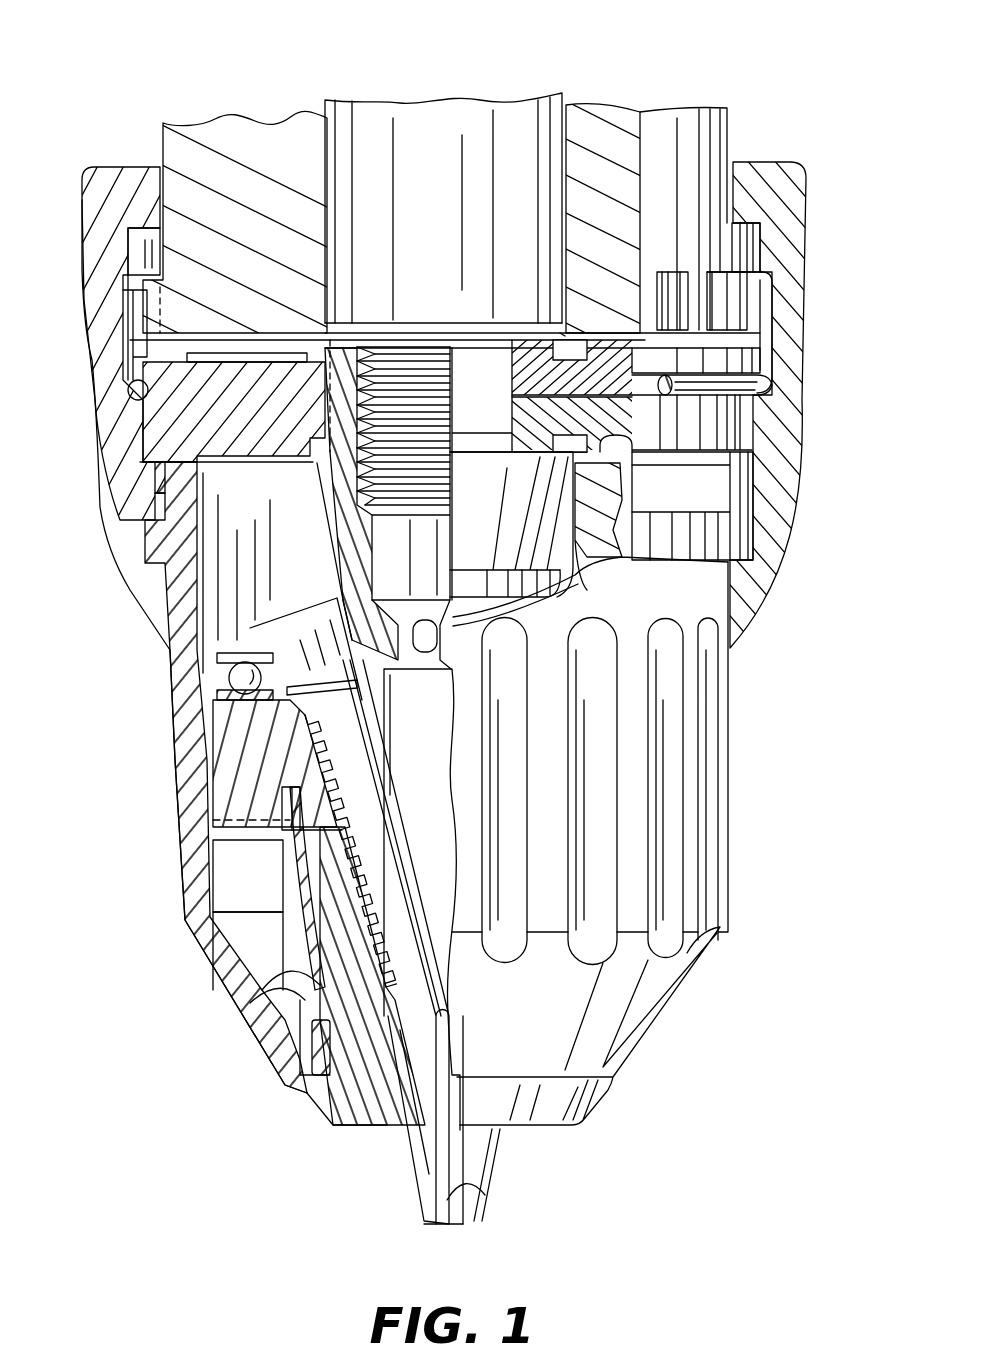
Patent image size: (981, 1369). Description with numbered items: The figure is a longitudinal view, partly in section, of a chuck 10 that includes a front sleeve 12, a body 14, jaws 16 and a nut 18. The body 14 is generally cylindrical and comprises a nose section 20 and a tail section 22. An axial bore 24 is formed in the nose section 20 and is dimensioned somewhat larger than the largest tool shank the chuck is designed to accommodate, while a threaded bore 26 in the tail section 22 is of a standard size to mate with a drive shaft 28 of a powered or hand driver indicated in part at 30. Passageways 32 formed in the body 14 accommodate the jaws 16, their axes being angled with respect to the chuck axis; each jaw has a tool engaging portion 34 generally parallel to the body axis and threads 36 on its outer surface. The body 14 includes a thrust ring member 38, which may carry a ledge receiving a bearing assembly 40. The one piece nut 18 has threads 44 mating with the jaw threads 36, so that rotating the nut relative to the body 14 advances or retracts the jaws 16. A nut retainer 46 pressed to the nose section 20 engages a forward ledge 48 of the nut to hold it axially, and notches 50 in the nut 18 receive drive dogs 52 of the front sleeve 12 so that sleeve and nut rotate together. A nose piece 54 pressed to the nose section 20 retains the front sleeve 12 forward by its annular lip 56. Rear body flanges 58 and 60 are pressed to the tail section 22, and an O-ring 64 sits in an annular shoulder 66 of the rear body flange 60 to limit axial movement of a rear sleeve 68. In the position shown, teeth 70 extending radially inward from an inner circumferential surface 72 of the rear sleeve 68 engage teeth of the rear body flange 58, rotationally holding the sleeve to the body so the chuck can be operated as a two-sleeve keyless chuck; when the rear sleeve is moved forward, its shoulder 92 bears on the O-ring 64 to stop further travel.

The chuck 10 is at (168, 1085).
The front sleeve 12 is at (185, 906).
The body 14 is at (324, 522).
The jaws 16 is at (390, 782).
The nut 18 is at (235, 748).
The nose section 20 is at (327, 1118).
The tail section 22 is at (398, 410).
The axial bore 24 is at (390, 1130).
The threaded bore 26 is at (405, 382).
The drive shaft 28 is at (565, 96).
The driver 30 is at (631, 86).
The passageways 32 is at (388, 994).
The tool engaging portion 34 is at (452, 1188).
The threads 36 is at (350, 930).
The thrust ring member 38 is at (250, 632).
The bearing assembly 40 is at (230, 678).
The threads 44 is at (240, 724).
The nut retainer 46 is at (232, 983).
The forward ledge 48 is at (293, 862).
The notches 50 is at (212, 806).
The drive dogs 52 is at (252, 940).
The nose piece 54 is at (325, 1125).
The annular lip 56 is at (285, 1028).
The rear body flange 58 is at (128, 396).
The rear body flange 60 is at (330, 322).
The O-ring 64 is at (135, 385).
The annular shoulder 66 is at (132, 347).
The rear sleeve 68 is at (806, 232).
The teeth 70 is at (152, 462).
The inner circumferential surface 72 is at (150, 502).
The shoulder 92 is at (128, 300).